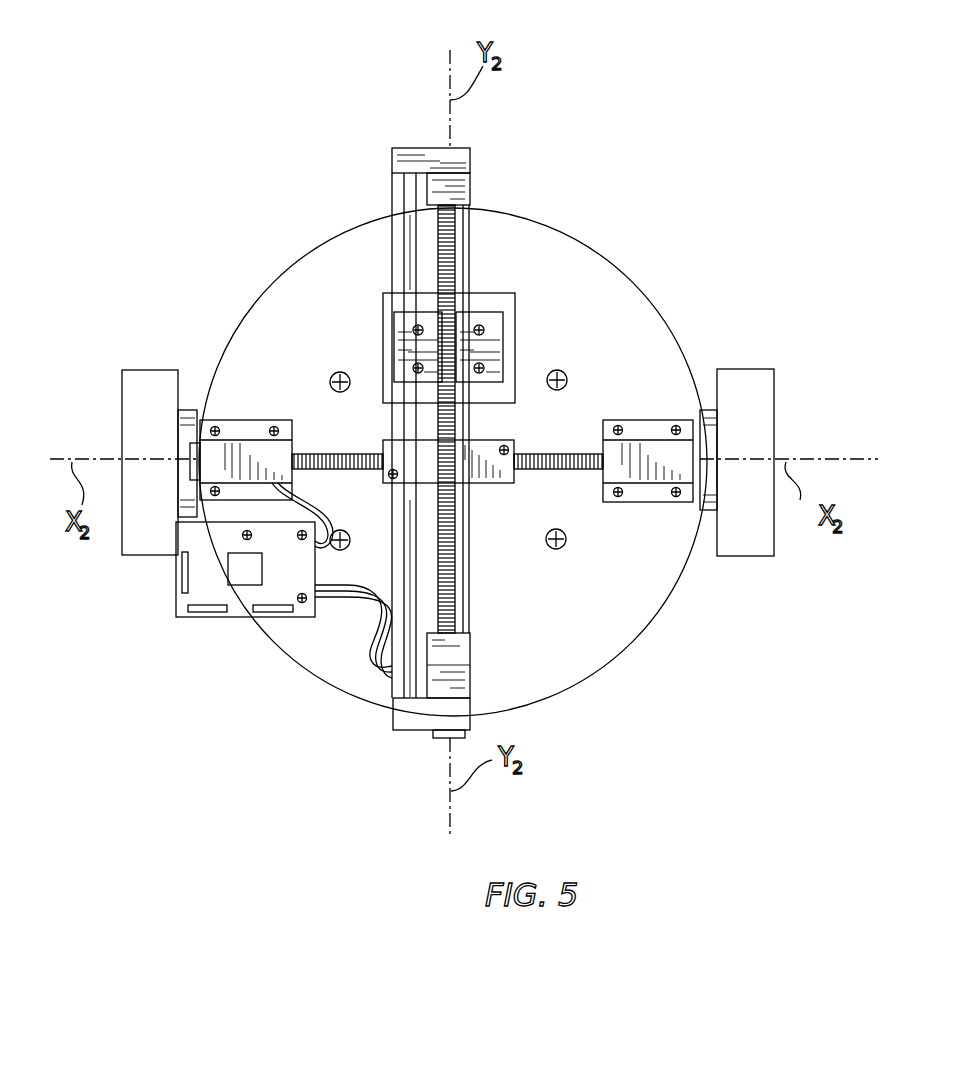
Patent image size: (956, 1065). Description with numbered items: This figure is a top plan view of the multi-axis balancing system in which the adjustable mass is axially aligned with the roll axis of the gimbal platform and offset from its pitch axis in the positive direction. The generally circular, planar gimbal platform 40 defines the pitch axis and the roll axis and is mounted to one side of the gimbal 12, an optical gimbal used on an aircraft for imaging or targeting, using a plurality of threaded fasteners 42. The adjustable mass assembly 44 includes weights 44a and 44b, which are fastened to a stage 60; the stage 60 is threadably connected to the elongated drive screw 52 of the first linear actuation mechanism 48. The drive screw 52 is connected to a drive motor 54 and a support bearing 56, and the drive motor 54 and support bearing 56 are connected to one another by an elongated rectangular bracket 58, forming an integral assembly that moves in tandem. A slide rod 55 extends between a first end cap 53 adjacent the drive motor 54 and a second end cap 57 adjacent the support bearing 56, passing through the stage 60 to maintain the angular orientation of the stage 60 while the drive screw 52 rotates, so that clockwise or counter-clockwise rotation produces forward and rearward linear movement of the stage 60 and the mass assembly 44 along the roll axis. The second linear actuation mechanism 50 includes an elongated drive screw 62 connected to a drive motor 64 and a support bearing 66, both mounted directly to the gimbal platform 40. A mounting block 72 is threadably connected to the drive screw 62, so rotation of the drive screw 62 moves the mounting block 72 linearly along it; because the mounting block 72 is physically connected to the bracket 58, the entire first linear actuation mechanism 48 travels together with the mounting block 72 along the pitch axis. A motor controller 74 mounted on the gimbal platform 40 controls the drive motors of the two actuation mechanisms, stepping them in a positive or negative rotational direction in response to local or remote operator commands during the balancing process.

The gimbal 12 is at (745, 542).
The gimbal platform 40 is at (600, 252).
The threaded fasteners 42 is at (568, 378).
The adjustable mass assembly 44 is at (446, 349).
The weight 44a is at (403, 320).
The weight 44b is at (493, 322).
The first linear actuation mechanism 48 is at (466, 703).
The second linear actuation mechanism 50 is at (304, 477).
The drive screw 52 is at (462, 560).
The first end cap 53 is at (410, 716).
The drive motor 54 is at (472, 646).
The slide rod 55 is at (404, 204).
The support bearing 56 is at (452, 192).
The second end cap 57 is at (392, 157).
The elongated rectangular bracket 58 is at (467, 527).
The stage 60 is at (446, 331).
The drive screw 62 is at (542, 470).
The drive motor 64 is at (248, 426).
The support bearing 66 is at (652, 502).
The mounting block 72 is at (488, 457).
The motor controller 74 is at (235, 618).